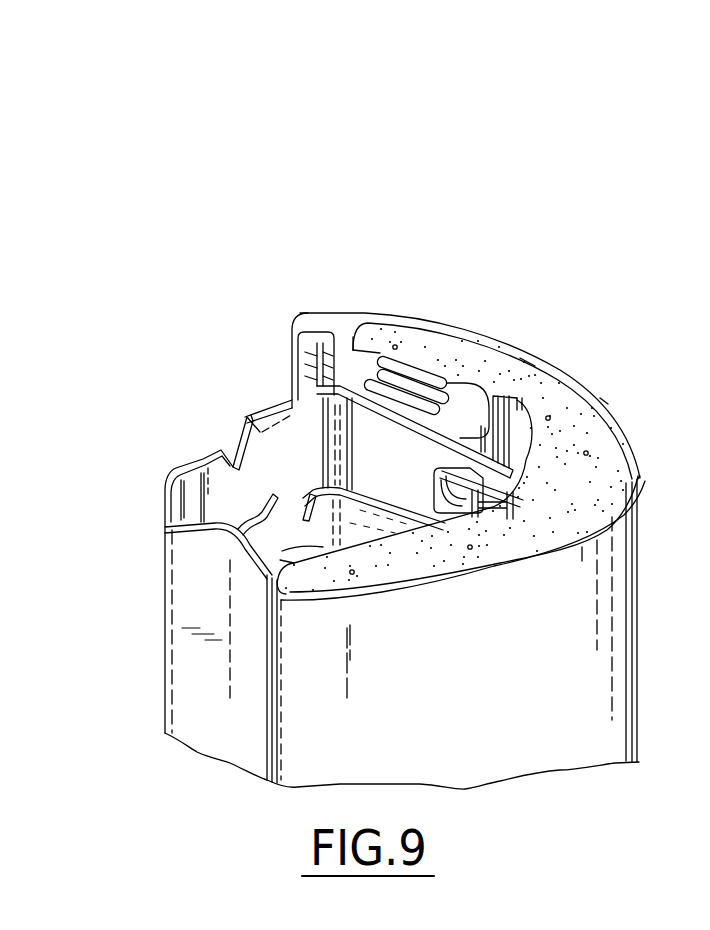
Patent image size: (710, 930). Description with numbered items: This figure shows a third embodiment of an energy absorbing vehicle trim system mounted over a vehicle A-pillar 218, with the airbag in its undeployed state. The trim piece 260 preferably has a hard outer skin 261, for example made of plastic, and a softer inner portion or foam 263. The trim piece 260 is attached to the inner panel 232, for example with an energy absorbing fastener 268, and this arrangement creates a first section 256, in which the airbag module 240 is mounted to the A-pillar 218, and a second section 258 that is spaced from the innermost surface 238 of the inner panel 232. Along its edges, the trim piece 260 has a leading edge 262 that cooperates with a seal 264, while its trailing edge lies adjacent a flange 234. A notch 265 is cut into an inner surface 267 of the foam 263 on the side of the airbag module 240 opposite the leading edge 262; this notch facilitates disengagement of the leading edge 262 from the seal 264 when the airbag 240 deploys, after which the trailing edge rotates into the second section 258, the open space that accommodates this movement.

The housing 218 is at (228, 418).
The inner panel 232 is at (375, 493).
The flange 234 is at (262, 553).
The innermost surface 238 is at (281, 518).
The airbag module 240 is at (433, 368).
The first section 256 is at (498, 440).
The second section 258 is at (325, 547).
The trim piece 260 is at (637, 476).
The hard outer skin 261 is at (603, 396).
The leading edge 262 is at (370, 337).
The softer inner portion 263 is at (527, 360).
The seal 264 is at (314, 318).
The inner wall 265 is at (537, 393).
The inner surface 267 is at (500, 396).
The energy absorbing fastener 268 is at (467, 500).